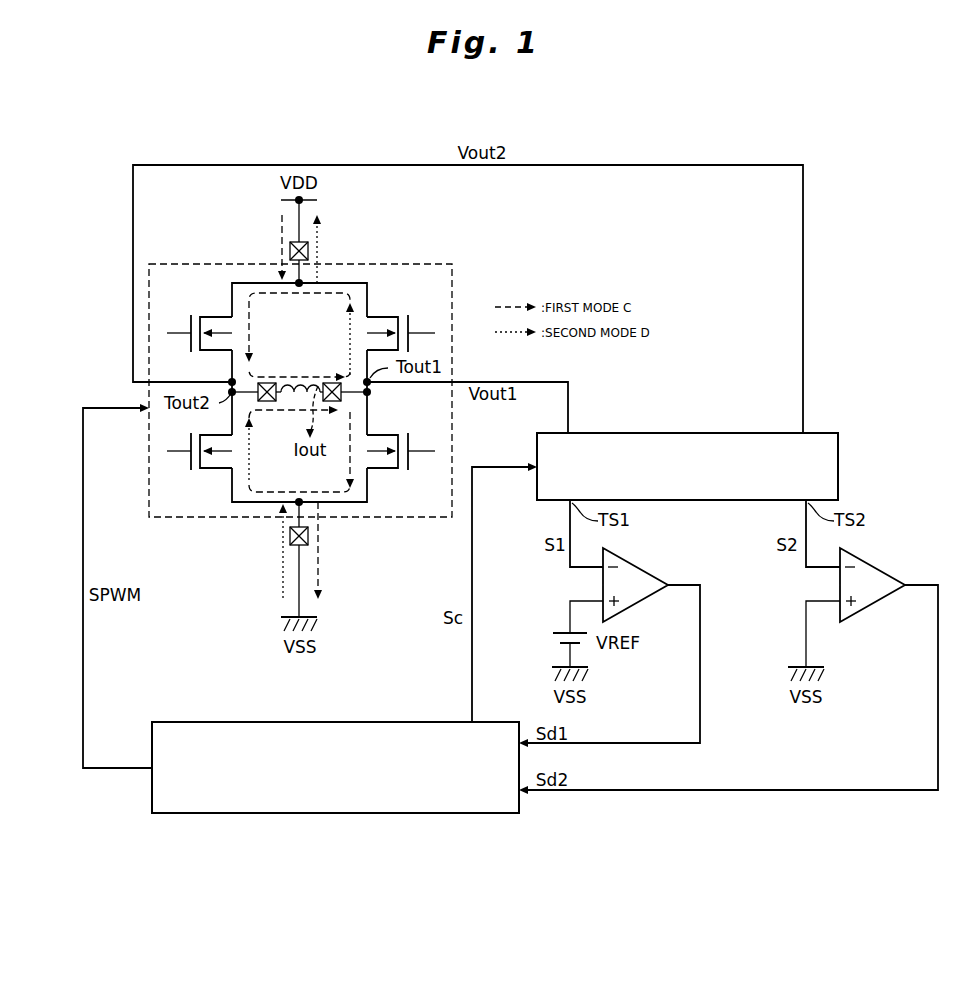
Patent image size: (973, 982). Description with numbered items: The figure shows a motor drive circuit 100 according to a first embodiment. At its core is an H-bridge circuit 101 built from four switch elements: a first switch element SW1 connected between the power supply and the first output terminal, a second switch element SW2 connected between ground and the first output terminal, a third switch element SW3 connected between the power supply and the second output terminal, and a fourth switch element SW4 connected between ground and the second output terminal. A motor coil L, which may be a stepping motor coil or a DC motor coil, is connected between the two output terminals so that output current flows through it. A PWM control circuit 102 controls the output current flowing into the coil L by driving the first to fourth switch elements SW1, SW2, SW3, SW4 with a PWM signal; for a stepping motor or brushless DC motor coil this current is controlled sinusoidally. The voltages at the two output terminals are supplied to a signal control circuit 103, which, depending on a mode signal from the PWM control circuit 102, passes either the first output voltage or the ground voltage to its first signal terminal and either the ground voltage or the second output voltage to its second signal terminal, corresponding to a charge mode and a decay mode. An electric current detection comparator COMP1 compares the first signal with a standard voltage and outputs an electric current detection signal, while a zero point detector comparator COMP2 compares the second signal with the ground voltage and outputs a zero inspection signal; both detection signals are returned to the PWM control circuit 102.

The motor drive circuit 100 is at (495, 847).
The H-bridge circuit 101 is at (452, 293).
The PWM control circuit 102 is at (375, 722).
The signal control circuit 103 is at (690, 433).
The first switch element SW1 is at (380, 316).
The second switch element SW2 is at (384, 469).
The third switch element SW3 is at (216, 316).
The fourth switch element SW4 is at (216, 469).
The motor coil L is at (302, 386).
The electric current detection comparator COMP1 is at (640, 564).
The zero point detector comparator COMP2 is at (876, 564).